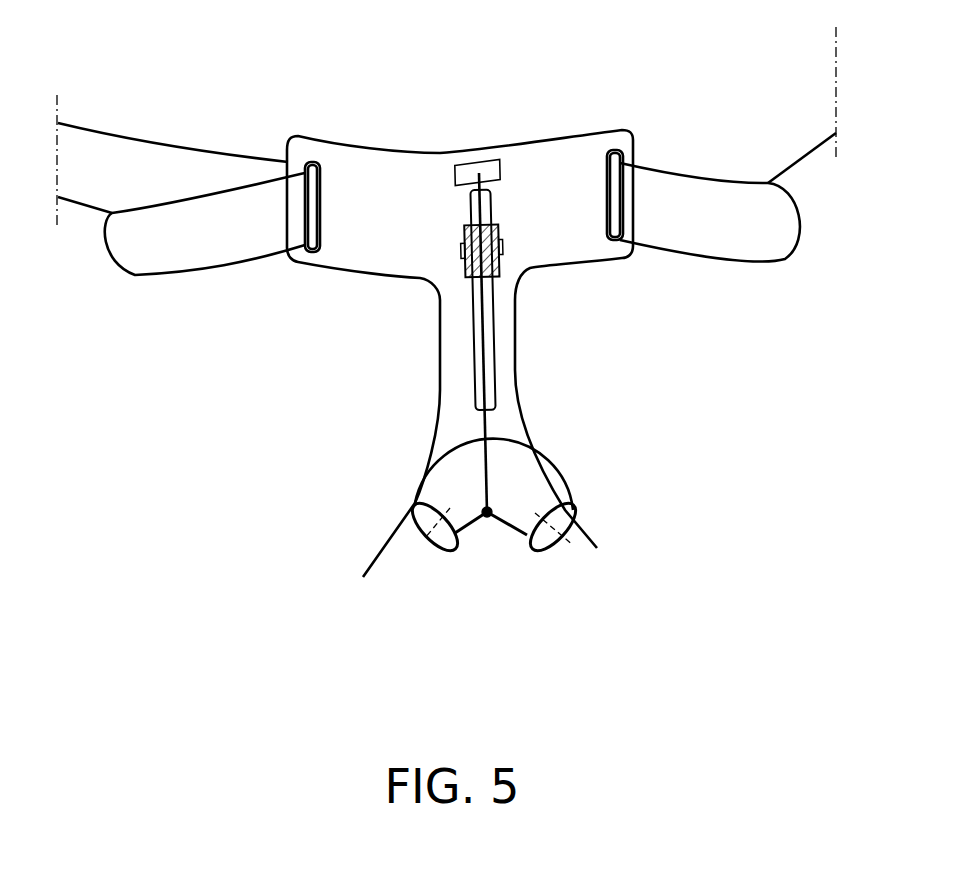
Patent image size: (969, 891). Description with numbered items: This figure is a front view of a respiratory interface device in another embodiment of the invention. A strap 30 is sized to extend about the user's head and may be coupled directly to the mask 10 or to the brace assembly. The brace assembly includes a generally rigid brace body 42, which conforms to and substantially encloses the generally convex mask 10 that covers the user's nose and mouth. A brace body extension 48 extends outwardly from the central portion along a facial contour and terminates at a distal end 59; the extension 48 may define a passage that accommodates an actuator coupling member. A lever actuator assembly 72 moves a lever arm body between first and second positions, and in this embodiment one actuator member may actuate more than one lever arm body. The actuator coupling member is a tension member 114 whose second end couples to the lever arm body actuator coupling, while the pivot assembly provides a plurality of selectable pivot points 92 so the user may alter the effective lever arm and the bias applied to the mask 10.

The strap 30 is at (142, 153).
The distal end 59 is at (437, 160).
The lever actuator assembly 72 is at (475, 115).
The brace body extension 48 is at (520, 360).
The tension member 114 is at (478, 427).
The mask 10 is at (525, 480).
The brace body 42 is at (420, 543).
The selectable pivot points 92 is at (432, 556).